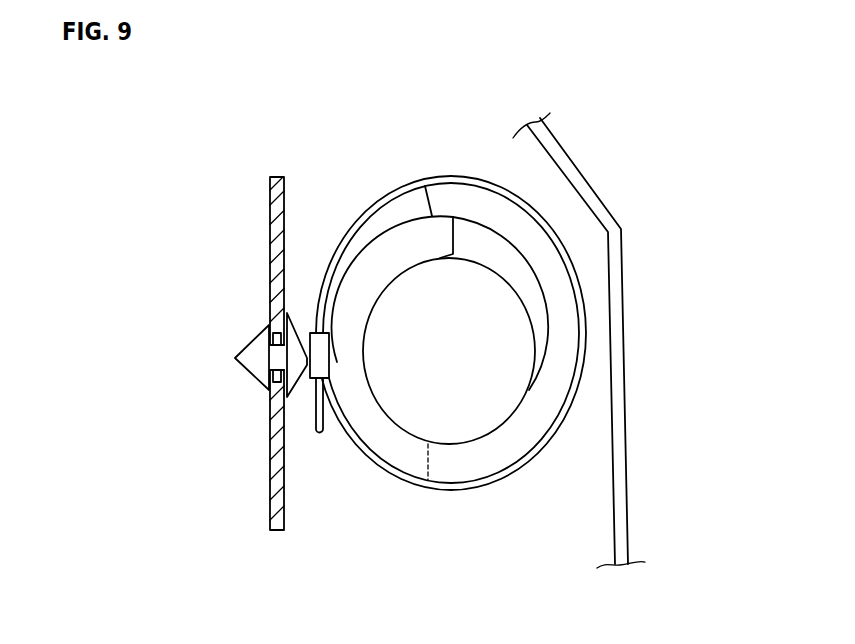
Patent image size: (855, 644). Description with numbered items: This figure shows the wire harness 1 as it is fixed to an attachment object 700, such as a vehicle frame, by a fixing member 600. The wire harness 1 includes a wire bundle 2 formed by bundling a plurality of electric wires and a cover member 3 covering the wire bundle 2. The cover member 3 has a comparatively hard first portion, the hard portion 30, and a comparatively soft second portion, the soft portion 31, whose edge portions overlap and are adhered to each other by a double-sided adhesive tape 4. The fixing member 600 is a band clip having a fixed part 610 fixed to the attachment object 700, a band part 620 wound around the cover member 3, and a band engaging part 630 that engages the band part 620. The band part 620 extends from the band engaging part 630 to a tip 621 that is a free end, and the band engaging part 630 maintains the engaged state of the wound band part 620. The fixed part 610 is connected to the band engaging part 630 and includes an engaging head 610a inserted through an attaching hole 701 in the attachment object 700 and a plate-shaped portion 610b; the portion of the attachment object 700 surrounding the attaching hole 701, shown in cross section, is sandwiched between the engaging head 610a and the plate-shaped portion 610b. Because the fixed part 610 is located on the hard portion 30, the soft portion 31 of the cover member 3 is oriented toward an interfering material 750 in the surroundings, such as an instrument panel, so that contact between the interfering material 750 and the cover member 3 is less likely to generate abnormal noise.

The wire harness 1 is at (422, 135).
The wire bundle 2 is at (449, 430).
The cover member 3 is at (411, 222).
The double-sided adhesive tape 4 is at (442, 215).
The hard portion 30 is at (395, 458).
The soft portion 31 is at (500, 457).
The fixing member 600 is at (303, 303).
The fixed part 610 is at (241, 381).
The engaging head 610a is at (236, 358).
The plate-shaped portion 610b is at (297, 316).
The band part 620 is at (372, 210).
The tip 621 is at (318, 437).
The band engaging part 630 is at (318, 357).
The attachment object 700 is at (269, 204).
The attaching hole 701 is at (278, 358).
The interfering material 750 is at (568, 167).